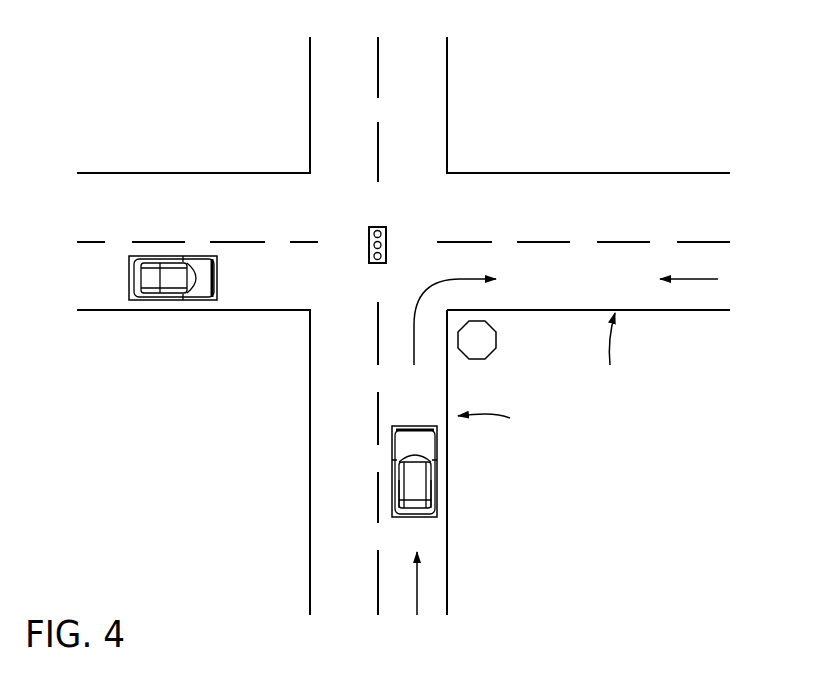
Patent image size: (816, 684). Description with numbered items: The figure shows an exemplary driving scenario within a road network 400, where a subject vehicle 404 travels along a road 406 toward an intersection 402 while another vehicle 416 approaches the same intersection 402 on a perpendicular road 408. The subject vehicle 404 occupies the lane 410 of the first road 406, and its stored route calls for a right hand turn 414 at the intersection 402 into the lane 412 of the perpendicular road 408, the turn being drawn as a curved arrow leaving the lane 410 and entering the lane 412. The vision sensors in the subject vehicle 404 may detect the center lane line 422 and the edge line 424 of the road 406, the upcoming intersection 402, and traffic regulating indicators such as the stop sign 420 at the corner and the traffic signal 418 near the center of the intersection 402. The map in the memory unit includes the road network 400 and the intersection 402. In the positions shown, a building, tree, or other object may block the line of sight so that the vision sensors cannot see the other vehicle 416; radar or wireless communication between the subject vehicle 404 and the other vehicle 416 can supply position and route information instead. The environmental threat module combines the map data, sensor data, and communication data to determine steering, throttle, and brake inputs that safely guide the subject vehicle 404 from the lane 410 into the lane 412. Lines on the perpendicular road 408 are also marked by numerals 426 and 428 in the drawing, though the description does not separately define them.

The road network 400 is at (612, 102).
The intersection 402 is at (301, 318).
The subject vehicle 404 is at (418, 483).
The road 406 is at (505, 428).
The perpendicular road 408 is at (610, 355).
The lane 410 is at (415, 602).
The lane 412 is at (715, 278).
The right hand turn 414 is at (421, 295).
The other vehicle 416 is at (185, 297).
The traffic signal 418 is at (388, 219).
The stop sign 420 is at (491, 356).
The center lane line 422 is at (377, 432).
The edge line 424 is at (447, 572).
The curb 426 is at (693, 312).
The center line marking 428 is at (606, 242).